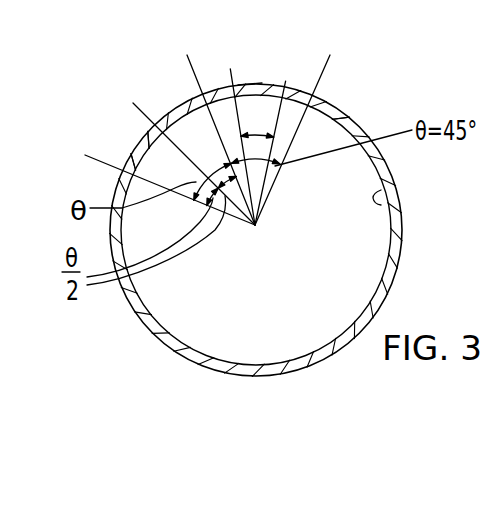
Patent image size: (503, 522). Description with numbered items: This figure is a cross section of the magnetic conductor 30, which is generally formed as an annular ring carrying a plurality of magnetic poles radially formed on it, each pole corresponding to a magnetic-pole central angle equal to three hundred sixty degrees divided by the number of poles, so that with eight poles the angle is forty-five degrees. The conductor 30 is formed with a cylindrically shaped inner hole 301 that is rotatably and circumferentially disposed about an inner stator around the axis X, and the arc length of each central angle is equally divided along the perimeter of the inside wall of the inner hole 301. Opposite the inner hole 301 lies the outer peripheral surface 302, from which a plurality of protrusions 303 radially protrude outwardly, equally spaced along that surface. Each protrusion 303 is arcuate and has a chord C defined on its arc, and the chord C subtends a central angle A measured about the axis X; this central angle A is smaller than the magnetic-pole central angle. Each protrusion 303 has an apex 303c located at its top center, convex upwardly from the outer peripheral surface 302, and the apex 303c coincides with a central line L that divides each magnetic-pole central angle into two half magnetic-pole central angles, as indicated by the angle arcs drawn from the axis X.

The magnetic conductor 30 is at (210, 84).
The inner hole 301 is at (392, 198).
The outer peripheral surface 302 is at (126, 168).
The protrusion 303 is at (250, 82).
The apex 303c is at (152, 121).
The chord C is at (267, 90).
The central line L is at (186, 170).
The central angle A is at (262, 142).
The axis X is at (255, 225).